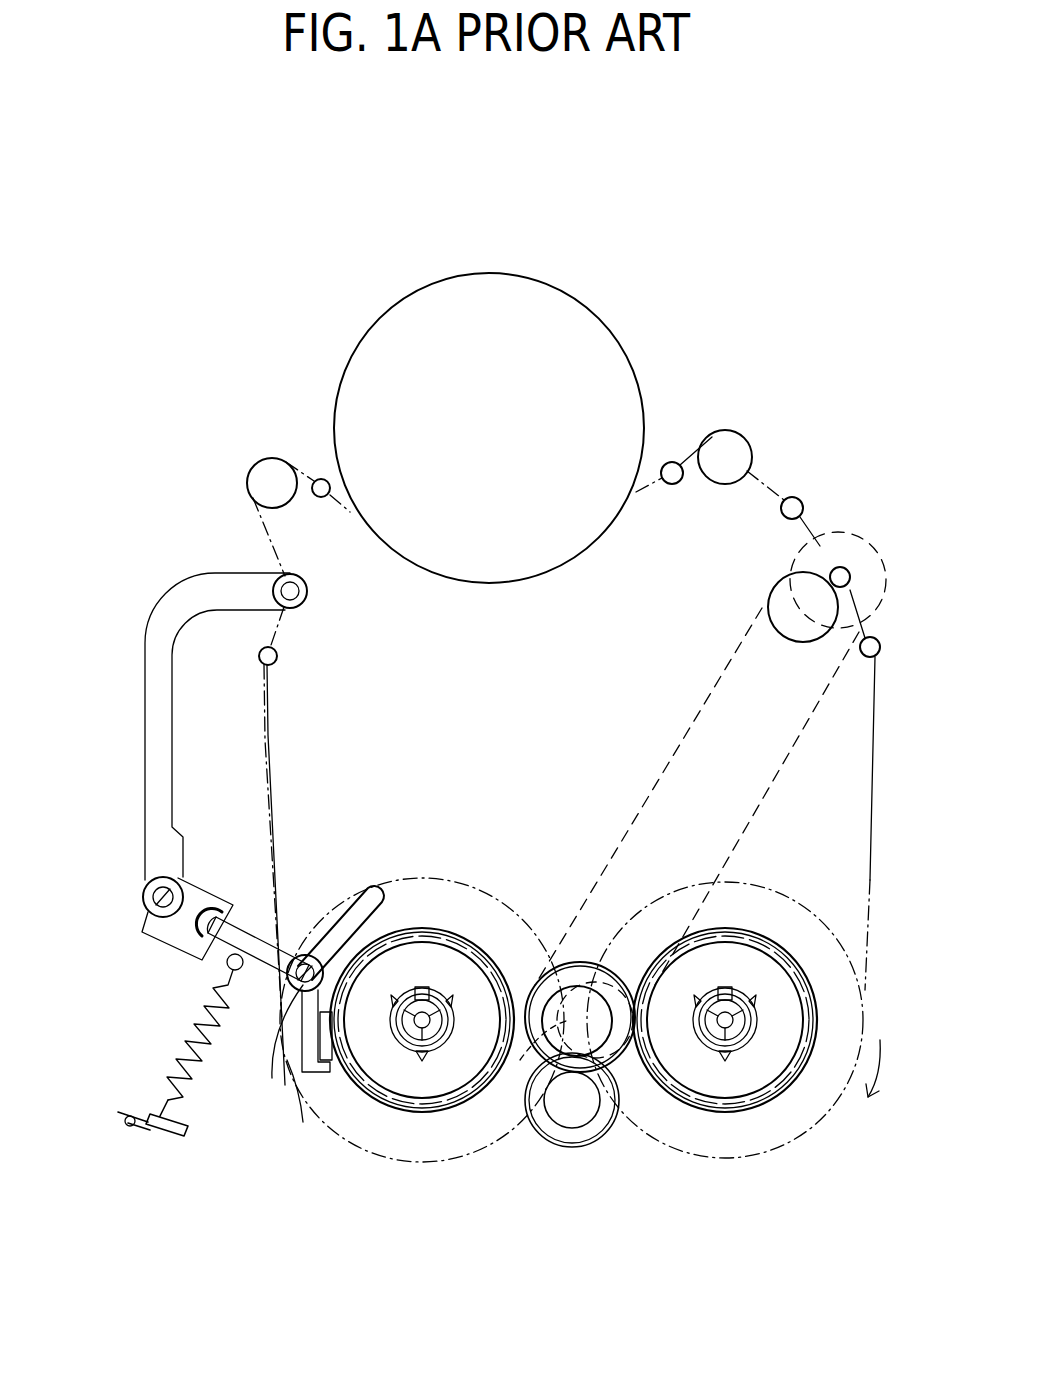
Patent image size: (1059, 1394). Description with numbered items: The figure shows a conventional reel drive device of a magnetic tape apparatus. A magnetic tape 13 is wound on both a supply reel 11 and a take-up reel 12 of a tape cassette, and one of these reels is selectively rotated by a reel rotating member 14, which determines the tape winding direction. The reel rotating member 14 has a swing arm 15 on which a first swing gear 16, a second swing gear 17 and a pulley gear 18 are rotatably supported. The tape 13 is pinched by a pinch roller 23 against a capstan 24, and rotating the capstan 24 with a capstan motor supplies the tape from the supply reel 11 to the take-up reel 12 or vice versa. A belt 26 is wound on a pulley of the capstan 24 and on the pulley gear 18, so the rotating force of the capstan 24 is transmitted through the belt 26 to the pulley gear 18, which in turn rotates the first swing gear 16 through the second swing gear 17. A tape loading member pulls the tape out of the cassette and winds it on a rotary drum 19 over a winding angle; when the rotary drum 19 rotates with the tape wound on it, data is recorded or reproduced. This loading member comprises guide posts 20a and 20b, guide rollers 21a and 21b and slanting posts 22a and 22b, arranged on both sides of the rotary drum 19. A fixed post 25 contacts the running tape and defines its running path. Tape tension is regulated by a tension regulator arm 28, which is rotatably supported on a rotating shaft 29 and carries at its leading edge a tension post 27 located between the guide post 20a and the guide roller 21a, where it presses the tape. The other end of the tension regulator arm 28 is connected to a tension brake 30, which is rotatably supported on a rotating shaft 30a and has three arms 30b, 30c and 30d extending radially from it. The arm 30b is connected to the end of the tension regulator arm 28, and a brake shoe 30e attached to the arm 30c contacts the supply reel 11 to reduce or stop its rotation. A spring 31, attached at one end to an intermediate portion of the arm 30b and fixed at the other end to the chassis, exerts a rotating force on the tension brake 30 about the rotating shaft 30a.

The supply reel 11 is at (385, 1108).
The take-up reel 12 is at (787, 1092).
The magnetic tape 13 is at (272, 714).
The reel rotating member 14 is at (566, 1156).
The swing arm 15 is at (584, 1132).
The first swing gear 16 is at (578, 960).
The second swing gear 17 is at (536, 1118).
The pulley gear 18 is at (618, 976).
The rotary drum 19 is at (496, 273).
The guide post 20a is at (278, 656).
The guide post 20b is at (864, 658).
The guide roller 21a is at (258, 484).
The guide roller 21b is at (726, 442).
The slanting post 22a is at (320, 478).
The slanting post 22b is at (670, 486).
The pinch roller 23 is at (790, 642).
The capstan 24 is at (851, 575).
The fixed post 25 is at (793, 497).
The belt 26 is at (662, 772).
The tension post 27 is at (300, 592).
The tension regulator arm 28 is at (145, 778).
The rotating shaft 29 is at (160, 906).
The tension brake 30 is at (310, 1016).
The rotating shaft 30a is at (294, 984).
The arm 30b is at (250, 912).
The arm 30c is at (302, 1078).
The arm 30d is at (360, 900).
The brake shoe 30e is at (312, 1108).
The spring 31 is at (204, 1064).